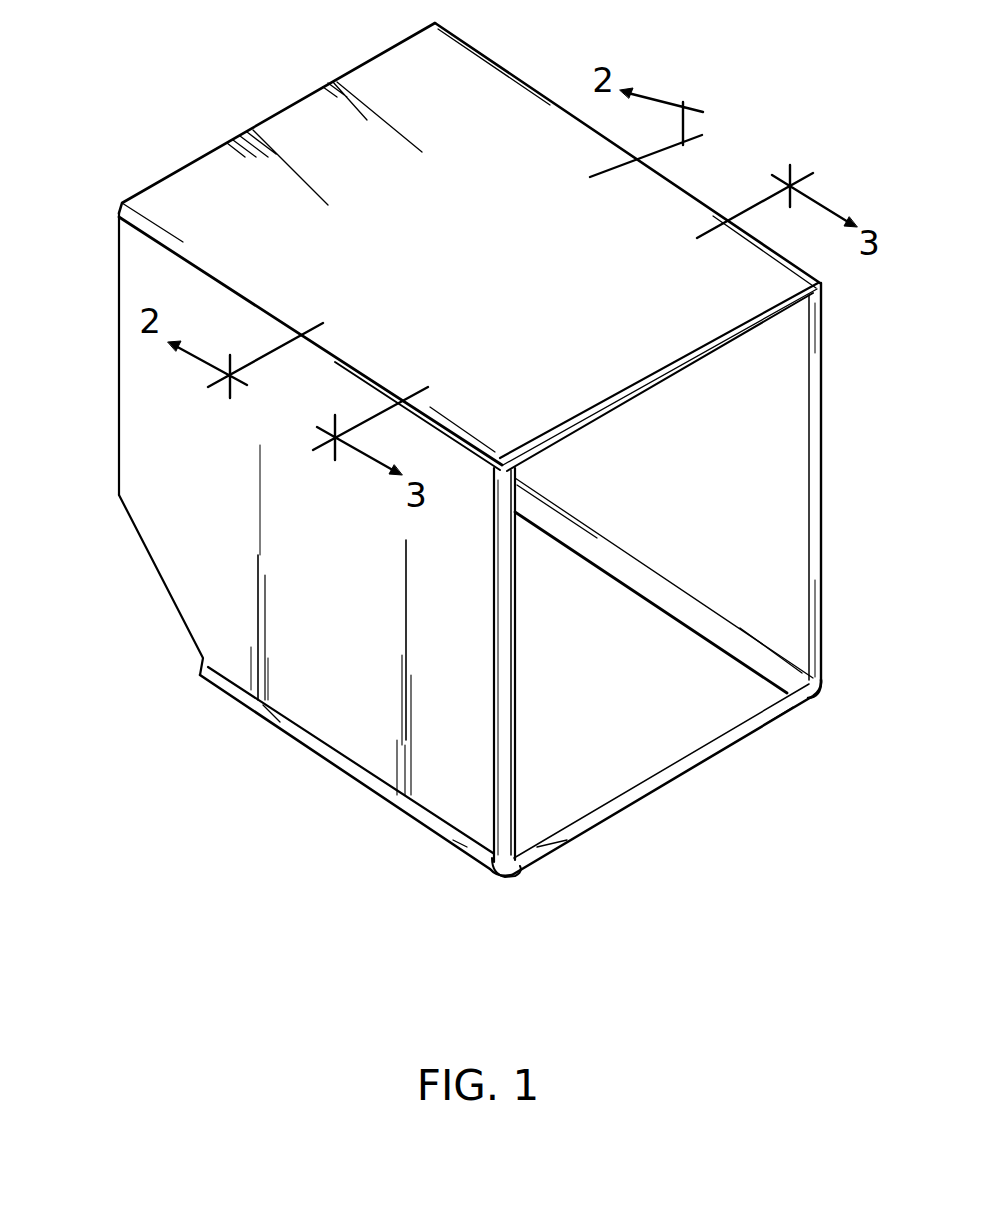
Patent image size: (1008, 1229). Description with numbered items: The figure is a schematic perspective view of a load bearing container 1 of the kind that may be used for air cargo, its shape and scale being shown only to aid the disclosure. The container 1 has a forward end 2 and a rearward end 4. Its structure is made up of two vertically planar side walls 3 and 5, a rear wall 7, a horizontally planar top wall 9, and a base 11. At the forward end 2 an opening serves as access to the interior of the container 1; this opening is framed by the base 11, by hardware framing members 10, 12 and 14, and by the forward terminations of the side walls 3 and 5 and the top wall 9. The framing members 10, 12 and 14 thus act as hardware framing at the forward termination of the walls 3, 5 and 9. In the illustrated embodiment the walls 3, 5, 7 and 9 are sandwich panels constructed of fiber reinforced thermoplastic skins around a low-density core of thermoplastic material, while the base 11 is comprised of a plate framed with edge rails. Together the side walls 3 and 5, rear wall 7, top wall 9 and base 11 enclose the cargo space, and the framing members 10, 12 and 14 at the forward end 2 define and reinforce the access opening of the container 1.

The container 1 is at (462, 466).
The forward end 2 is at (535, 843).
The side wall 3 is at (232, 504).
The rearward end 4 is at (193, 658).
The side wall 5 is at (692, 579).
The rear wall 7 is at (118, 444).
The top wall 9 is at (502, 95).
The framing member 10 is at (812, 543).
The base 11 is at (673, 715).
The framing member 12 is at (508, 612).
The framing member 14 is at (637, 398).